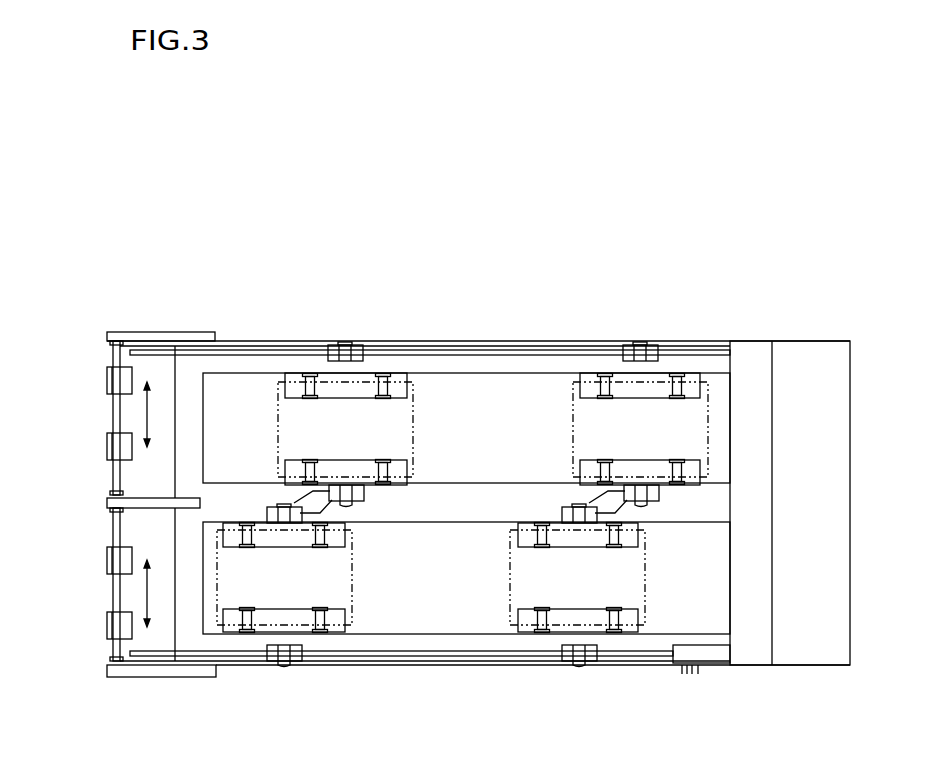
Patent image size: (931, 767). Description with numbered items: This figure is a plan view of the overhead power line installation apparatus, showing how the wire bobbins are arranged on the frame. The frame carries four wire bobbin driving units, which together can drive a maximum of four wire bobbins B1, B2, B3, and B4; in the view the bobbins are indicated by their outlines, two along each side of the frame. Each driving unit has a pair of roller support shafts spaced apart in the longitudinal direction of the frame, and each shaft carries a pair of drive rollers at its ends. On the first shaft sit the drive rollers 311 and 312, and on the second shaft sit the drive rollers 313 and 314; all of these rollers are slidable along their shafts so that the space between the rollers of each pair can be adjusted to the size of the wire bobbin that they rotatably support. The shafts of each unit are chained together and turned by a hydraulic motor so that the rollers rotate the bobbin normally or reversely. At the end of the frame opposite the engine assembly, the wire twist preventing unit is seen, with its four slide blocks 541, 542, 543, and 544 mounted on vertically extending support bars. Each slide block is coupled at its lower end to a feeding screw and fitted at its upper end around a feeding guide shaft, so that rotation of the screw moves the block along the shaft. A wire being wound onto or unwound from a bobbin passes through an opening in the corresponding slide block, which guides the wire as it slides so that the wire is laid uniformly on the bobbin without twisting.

The drive roller 311 is at (307, 374).
The drive roller 312 is at (307, 472).
The drive roller 313 is at (383, 374).
The drive roller 314 is at (388, 472).
The wire bobbin B1 is at (353, 595).
The wire bobbin B2 is at (647, 597).
The wire bobbin B3 is at (413, 410).
The wire bobbin B4 is at (708, 410).
The slide block 541 is at (107, 446).
The slide block 542 is at (107, 379).
The slide block 543 is at (107, 562).
The slide block 544 is at (107, 628).